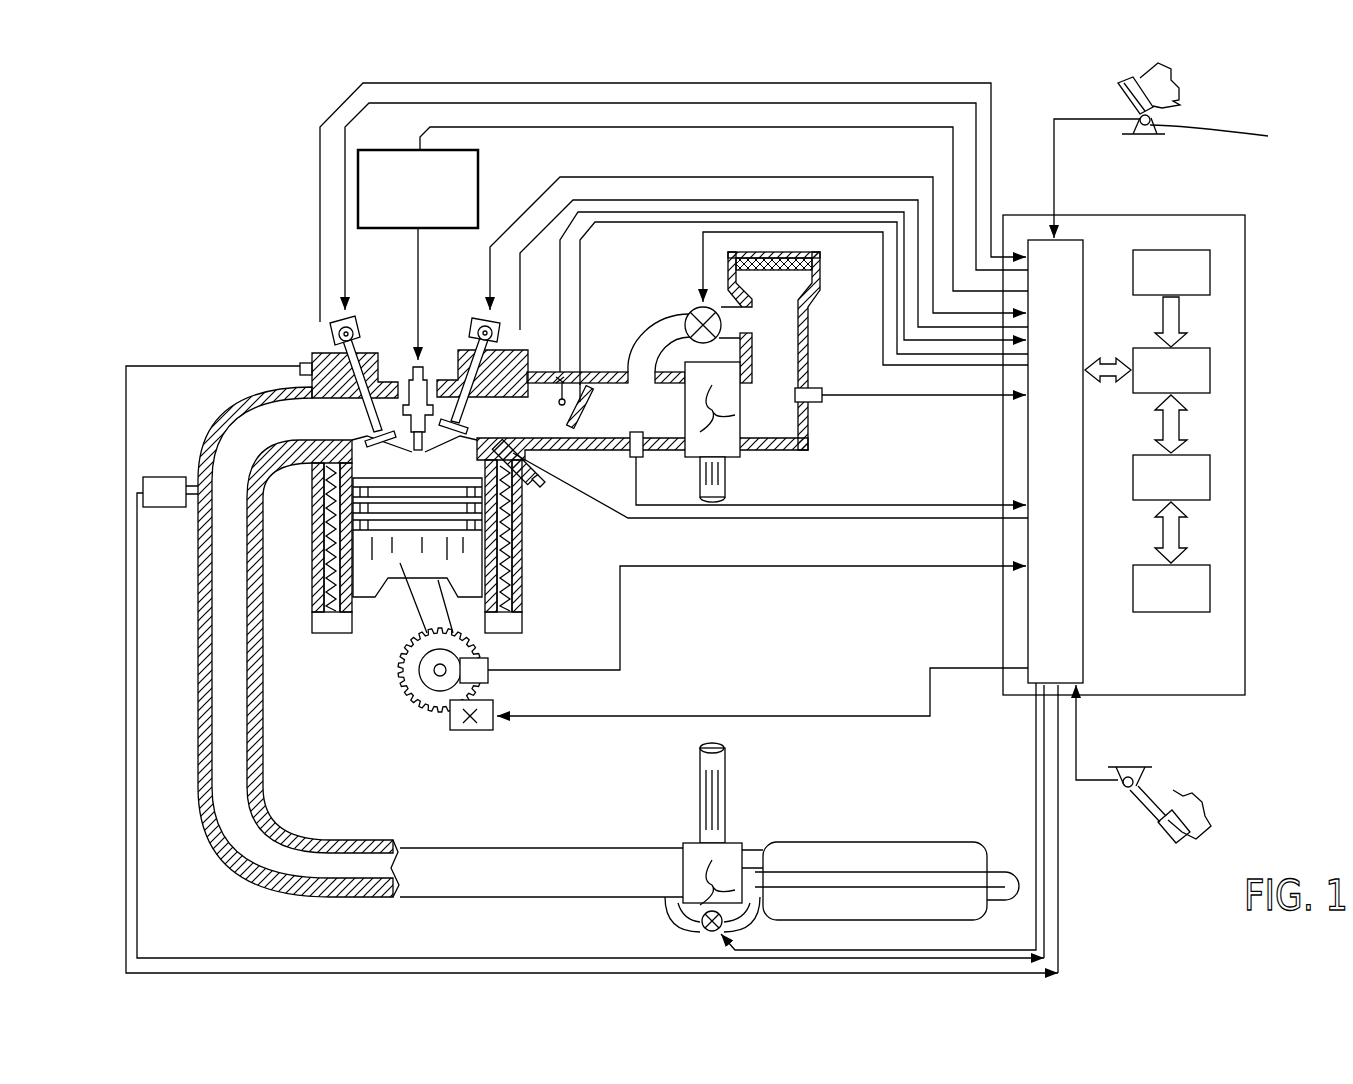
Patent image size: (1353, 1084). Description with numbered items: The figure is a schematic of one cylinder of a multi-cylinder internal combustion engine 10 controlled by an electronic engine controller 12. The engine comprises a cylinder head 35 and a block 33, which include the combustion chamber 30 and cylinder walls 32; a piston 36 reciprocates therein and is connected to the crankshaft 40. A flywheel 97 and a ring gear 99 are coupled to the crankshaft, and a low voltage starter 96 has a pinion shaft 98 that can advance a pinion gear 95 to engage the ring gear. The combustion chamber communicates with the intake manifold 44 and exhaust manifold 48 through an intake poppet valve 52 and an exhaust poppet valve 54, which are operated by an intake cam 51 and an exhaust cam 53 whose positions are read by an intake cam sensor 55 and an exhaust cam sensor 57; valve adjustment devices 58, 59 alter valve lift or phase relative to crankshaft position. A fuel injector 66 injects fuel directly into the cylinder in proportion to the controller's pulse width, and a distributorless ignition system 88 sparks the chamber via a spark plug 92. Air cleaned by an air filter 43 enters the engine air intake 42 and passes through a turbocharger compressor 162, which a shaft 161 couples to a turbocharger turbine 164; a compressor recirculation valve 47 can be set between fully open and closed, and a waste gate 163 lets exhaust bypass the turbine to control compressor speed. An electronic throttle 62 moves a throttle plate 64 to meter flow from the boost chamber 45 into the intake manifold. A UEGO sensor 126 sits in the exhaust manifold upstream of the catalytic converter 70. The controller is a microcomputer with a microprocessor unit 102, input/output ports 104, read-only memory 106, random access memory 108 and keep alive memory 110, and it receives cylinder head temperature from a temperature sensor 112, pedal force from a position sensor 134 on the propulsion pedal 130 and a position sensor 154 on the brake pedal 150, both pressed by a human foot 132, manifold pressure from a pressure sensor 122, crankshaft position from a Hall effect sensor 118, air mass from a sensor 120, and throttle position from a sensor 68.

The internal combustion engine 10 is at (240, 300).
The electronic engine controller 12 is at (1248, 217).
The combustion chamber 30 is at (413, 457).
The cylinder walls 32 is at (358, 600).
The block 33 is at (310, 503).
The cylinder head 35 is at (303, 358).
The piston 36 is at (400, 567).
The crankshaft 40 is at (416, 679).
The engine air intake 42 is at (640, 270).
The air filter 43 is at (790, 272).
The intake manifold 44 is at (527, 421).
The boost chamber 45 is at (629, 421).
The compressor recirculation valve 47 is at (688, 310).
The exhaust manifold 48 is at (264, 429).
The intake cam 51 is at (483, 300).
The intake poppet valve 52 is at (462, 412).
The exhaust cam 53 is at (360, 302).
The exhaust poppet valve 54 is at (360, 433).
The intake cam sensor 55 is at (505, 343).
The exhaust cam sensor 57 is at (332, 340).
The valve adjustment device 58 is at (360, 336).
The valve adjustment device 59 is at (502, 323).
The electronic throttle 62 is at (592, 406).
The throttle plate 64 is at (576, 424).
The fuel injector 66 is at (535, 473).
The throttle position sensor 68 is at (560, 380).
The catalytic converter 70 is at (810, 841).
The distributorless ignition system 88 is at (377, 152).
The spark plug 92 is at (412, 362).
The pinion gear 95 is at (470, 726).
The starter 96 is at (482, 741).
The flywheel 97 is at (405, 680).
The pinion shaft 98 is at (450, 726).
The ring gear 99 is at (430, 712).
The microprocessor unit 102 is at (1212, 365).
The input/output ports 104 is at (1085, 250).
The read-only memory 106 is at (1212, 270).
The random access memory 108 is at (1212, 475).
The keep alive memory 110 is at (1212, 585).
The temperature sensor 112 is at (298, 365).
The Hall effect sensor 118 is at (488, 660).
The air mass sensor 120 is at (822, 390).
The pressure sensor 122 is at (630, 455).
The Universal Exhaust Gas Oxygen sensor 126 is at (158, 477).
The propulsion pedal 130 is at (1120, 97).
The human foot 132 is at (1175, 85).
The position sensor 134 is at (1231, 138).
The brake pedal 150 is at (1150, 825).
The position sensor 154 is at (1118, 769).
The shaft 161 is at (700, 478).
The turbocharger compressor 162 is at (725, 440).
The waste gate 163 is at (706, 940).
The turbocharger turbine 164 is at (685, 845).